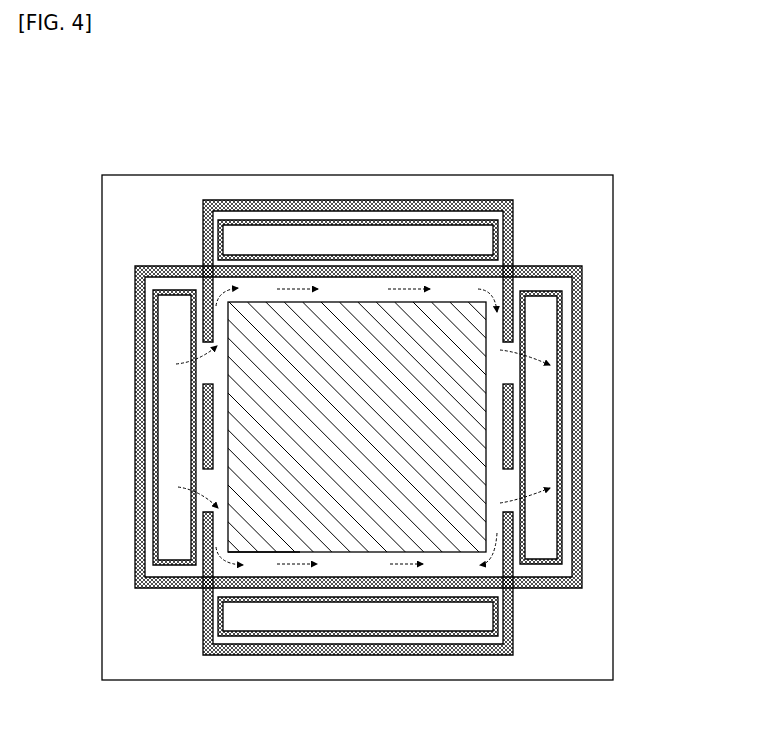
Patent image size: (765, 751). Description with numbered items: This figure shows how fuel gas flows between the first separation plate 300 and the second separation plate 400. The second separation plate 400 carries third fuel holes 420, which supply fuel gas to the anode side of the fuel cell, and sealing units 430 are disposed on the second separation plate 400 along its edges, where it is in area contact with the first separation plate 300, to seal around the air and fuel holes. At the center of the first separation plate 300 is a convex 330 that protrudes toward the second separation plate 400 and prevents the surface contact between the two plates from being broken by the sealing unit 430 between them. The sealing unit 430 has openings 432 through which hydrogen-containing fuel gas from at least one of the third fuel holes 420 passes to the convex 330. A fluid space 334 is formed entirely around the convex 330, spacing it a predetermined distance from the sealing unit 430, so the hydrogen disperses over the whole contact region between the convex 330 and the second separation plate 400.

The second separation plate 400 is at (170, 190).
The first separation plate 300 is at (343, 291).
The sealing unit 430 is at (547, 268).
The third fuel hole 420 is at (165, 438).
The opening 432 is at (213, 378).
The convex 330 is at (262, 533).
The fluid space 334 is at (365, 566).